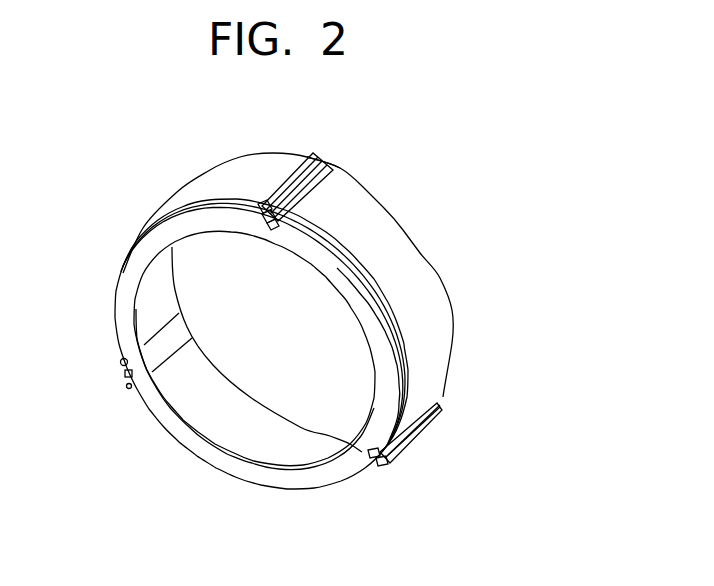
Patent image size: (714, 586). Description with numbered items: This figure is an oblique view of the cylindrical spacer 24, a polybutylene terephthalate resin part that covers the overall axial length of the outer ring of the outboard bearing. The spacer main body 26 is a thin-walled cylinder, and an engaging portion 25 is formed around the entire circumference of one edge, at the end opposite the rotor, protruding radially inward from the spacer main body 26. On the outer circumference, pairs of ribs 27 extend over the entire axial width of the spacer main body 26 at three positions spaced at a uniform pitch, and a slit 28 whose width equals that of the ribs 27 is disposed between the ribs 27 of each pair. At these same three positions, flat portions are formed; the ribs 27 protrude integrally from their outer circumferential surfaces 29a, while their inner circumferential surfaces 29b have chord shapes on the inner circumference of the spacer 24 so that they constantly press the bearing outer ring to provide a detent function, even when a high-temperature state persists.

The spacer 24 is at (458, 293).
The engaging portion 25 is at (168, 422).
The spacer main body 26 is at (373, 247).
The ribs 27 is at (309, 155).
The slit 28 is at (322, 157).
The outer circumferential surfaces of the flat portions 29a is at (322, 187).
The inner circumferential surfaces of the flat portions 29b is at (180, 330).